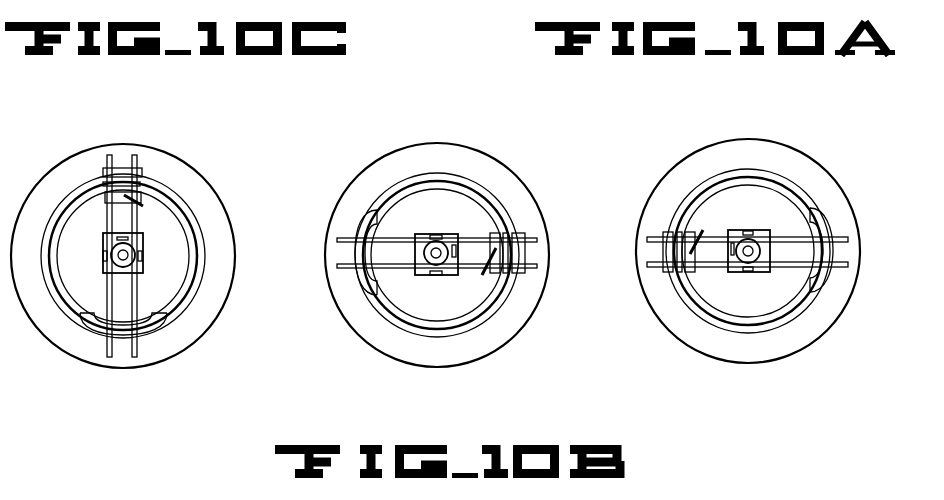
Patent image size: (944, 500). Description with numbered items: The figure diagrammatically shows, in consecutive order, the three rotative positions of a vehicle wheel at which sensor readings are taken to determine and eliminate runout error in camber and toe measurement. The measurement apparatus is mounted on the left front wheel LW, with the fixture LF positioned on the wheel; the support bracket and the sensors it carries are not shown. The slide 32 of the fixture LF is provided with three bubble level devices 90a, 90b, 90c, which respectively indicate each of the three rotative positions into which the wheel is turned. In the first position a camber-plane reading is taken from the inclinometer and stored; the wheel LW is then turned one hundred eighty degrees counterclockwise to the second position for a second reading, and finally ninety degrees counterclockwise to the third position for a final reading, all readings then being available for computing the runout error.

In FIG. 10C, the left front wheel LW is at (193, 182).
In FIG. 10B, the left front wheel LW is at (501, 168).
In FIG. 10A, the left front wheel LW is at (803, 162).
In FIG. 10C, the fixture LF is at (148, 168).
In FIG. 10B, the fixture LF is at (520, 226).
In FIG. 10A, the fixture LF is at (830, 206).
In FIG. 10C, the slide 32 is at (136, 267).
In FIG. 10B, the slide 32 is at (452, 274).
In FIG. 10A, the slide 32 is at (768, 271).
In FIG. 10C, the bubble level device 90a is at (139, 256).
In FIG. 10B, the bubble level device 90a is at (447, 286).
In FIG. 10A, the bubble level device 90a is at (752, 229).
In FIG. 10C, the bubble level device 90b is at (104, 262).
In FIG. 10B, the bubble level device 90b is at (438, 234).
In FIG. 10A, the bubble level device 90b is at (752, 272).
In FIG. 10C, the bubble level device 90c is at (108, 236).
In FIG. 10B, the bubble level device 90c is at (455, 243).
In FIG. 10A, the bubble level device 90c is at (731, 242).